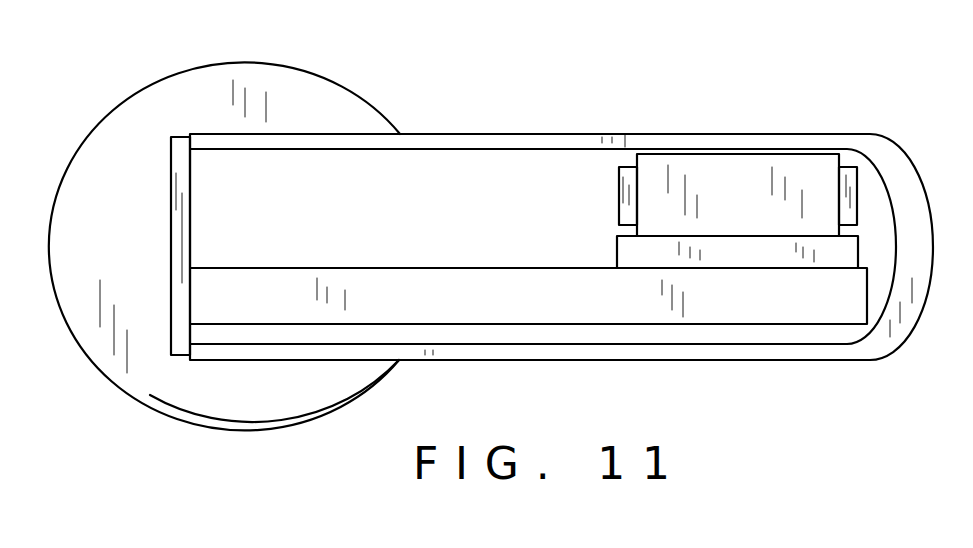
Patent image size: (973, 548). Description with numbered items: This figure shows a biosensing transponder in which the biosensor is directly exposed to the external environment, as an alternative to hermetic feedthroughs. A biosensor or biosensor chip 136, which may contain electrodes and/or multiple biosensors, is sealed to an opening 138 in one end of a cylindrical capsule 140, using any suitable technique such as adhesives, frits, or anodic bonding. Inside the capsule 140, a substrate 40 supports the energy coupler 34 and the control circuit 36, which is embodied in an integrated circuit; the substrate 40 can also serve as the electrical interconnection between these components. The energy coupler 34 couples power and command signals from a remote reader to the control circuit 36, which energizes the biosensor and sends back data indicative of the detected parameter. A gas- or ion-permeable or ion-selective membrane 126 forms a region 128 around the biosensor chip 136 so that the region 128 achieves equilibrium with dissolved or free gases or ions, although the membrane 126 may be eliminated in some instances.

The membrane 126 is at (105, 375).
The region 128 is at (207, 385).
The biosensor chip 136 is at (178, 137).
The opening 138 is at (214, 198).
The cylindrical capsule 140 is at (538, 133).
The energy coupler 34 is at (842, 158).
The control circuit 36 is at (860, 243).
The substrate 40 is at (717, 325).